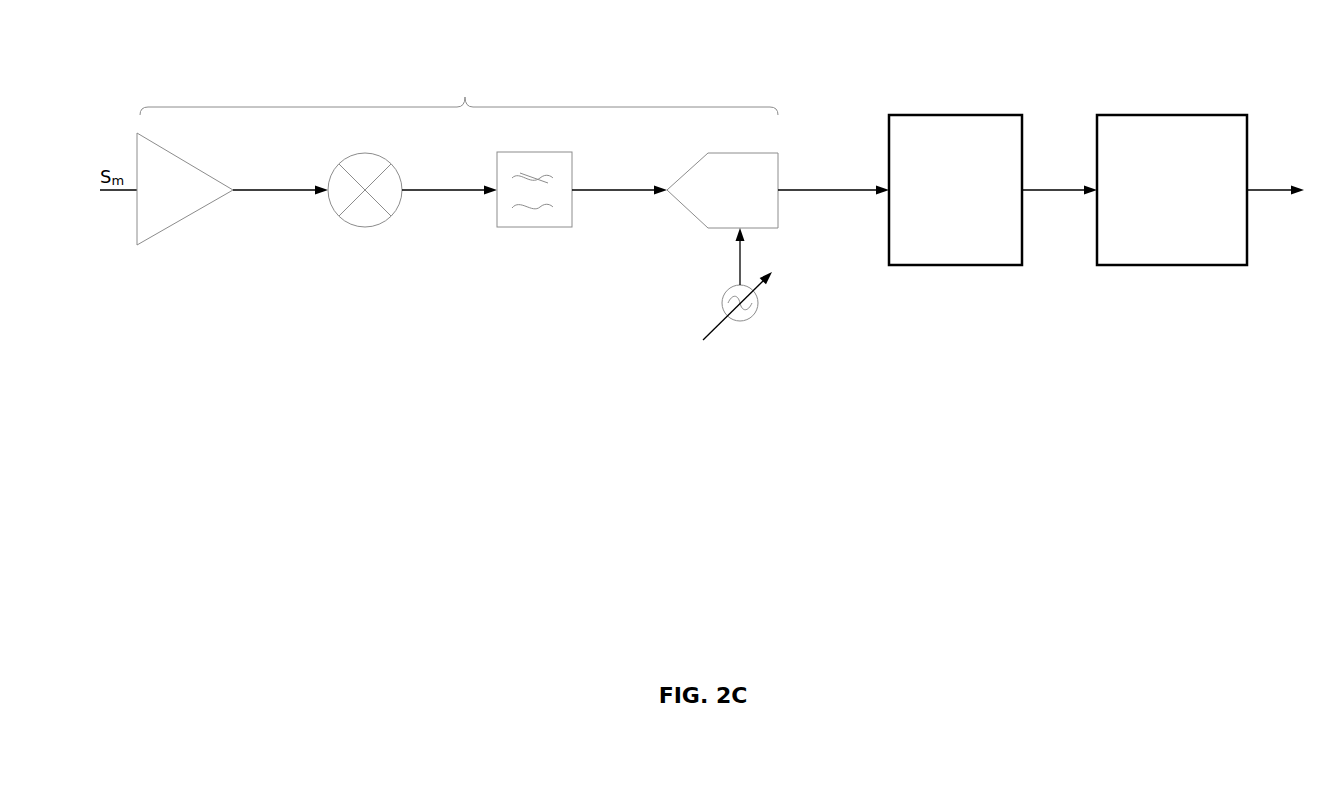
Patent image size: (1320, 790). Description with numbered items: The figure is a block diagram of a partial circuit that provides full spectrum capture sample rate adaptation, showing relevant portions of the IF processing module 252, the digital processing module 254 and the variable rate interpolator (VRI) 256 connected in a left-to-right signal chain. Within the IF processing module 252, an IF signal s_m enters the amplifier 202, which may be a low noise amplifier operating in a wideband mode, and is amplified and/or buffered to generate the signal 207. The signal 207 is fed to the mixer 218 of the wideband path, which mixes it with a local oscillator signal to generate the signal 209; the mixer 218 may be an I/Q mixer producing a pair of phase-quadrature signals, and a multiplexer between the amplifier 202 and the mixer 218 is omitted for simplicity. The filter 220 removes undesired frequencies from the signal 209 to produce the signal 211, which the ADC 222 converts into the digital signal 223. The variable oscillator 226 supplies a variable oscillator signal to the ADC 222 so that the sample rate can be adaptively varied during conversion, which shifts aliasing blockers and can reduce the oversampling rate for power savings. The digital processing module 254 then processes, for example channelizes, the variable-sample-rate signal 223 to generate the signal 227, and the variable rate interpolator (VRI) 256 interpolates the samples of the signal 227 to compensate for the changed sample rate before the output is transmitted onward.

The amplifier 202 is at (186, 162).
The signal 207 is at (283, 190).
The mixer 218 is at (338, 166).
The signal 209 is at (449, 190).
The filter 220 is at (497, 172).
The signal 211 is at (637, 190).
The ADC 222 is at (686, 172).
The digital signal 223 is at (852, 190).
The variable oscillator 226 is at (757, 318).
The IF processing module 252 is at (459, 76).
The digital processing module 254 is at (950, 115).
The signal 227 is at (1068, 191).
The variable rate interpolator 256 is at (1172, 115).